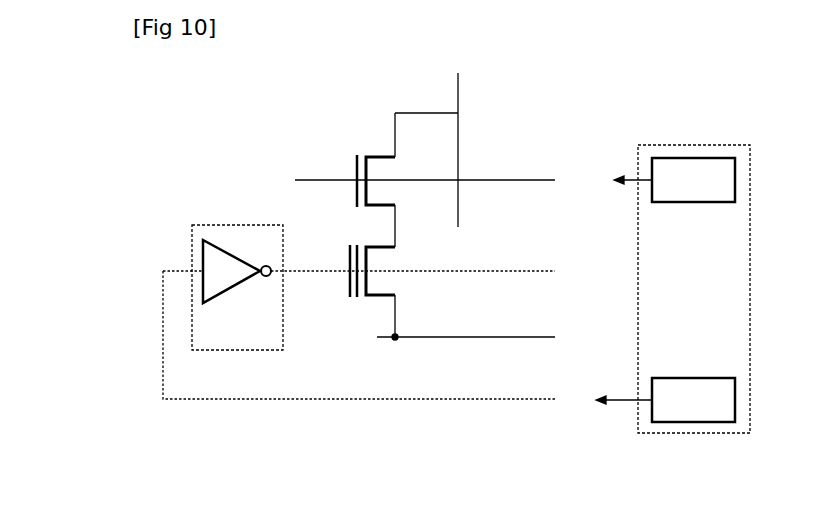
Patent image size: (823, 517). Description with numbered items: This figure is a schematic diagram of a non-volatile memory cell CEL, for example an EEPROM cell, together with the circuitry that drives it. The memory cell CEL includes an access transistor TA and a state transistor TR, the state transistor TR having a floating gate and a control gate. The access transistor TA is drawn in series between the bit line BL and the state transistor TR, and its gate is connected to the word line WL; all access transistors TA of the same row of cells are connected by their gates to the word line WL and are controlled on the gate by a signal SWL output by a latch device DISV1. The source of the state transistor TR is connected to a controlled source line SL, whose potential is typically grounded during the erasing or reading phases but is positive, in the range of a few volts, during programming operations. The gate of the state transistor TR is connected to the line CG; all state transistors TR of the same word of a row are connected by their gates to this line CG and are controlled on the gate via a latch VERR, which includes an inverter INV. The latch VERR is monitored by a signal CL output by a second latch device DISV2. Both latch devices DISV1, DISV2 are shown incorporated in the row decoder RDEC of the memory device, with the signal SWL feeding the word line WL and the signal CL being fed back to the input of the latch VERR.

The bit line BL is at (459, 88).
The word line WL is at (513, 177).
The access transistor TA is at (350, 148).
The state transistor TR is at (351, 301).
The control gate line CG is at (514, 268).
The controlled source line SL is at (462, 338).
The latch VERR is at (238, 222).
The inverter INV is at (233, 289).
The signal CL is at (407, 341).
The signal SWL is at (606, 181).
The row decoder RDEC is at (693, 436).
The latch device DISV1 is at (693, 180).
The latch device DISV2 is at (693, 400).
The memory cell CEL is at (622, 105).